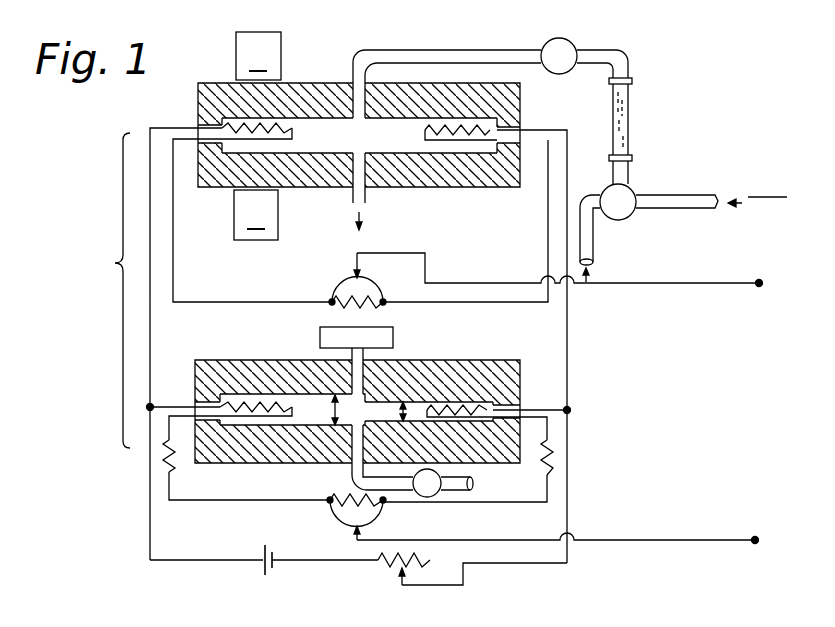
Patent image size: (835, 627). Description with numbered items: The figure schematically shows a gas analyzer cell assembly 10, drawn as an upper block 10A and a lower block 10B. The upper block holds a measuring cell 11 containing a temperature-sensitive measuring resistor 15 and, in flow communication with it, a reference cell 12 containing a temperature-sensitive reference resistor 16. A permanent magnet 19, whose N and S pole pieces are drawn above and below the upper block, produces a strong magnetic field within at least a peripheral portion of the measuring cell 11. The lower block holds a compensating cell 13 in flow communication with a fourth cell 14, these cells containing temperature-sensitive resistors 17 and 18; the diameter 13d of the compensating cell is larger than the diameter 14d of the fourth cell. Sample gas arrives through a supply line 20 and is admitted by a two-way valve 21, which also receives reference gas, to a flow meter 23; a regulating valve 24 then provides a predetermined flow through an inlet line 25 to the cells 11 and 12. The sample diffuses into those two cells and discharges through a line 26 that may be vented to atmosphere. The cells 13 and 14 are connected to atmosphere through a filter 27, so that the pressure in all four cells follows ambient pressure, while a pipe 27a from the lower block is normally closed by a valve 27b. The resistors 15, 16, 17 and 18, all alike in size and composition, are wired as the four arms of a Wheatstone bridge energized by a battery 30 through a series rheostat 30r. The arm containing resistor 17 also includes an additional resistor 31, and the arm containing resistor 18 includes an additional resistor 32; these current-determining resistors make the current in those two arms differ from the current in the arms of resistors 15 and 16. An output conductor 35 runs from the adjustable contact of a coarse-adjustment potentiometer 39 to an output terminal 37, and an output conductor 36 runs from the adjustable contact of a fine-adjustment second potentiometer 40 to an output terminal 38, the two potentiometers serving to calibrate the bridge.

The gas analyzer cell assembly 10 is at (100, 277).
The upper detector block 10A is at (198, 104).
The lower detector block 10B is at (195, 372).
The measuring cell 11 is at (329, 128).
The reference cell 12 is at (404, 130).
The compensating cell 13 is at (312, 408).
The diameter of compensating cell 13d is at (331, 412).
The fourth cell 14 is at (380, 410).
The diameter of fourth cell 14d is at (400, 413).
The measuring resistor 15 is at (273, 125).
The reference resistor 16 is at (482, 129).
The temperature-sensitive resistor 17 is at (255, 403).
The temperature-sensitive resistor 18 is at (456, 407).
The permanent magnet 19 is at (236, 47).
The supply line 20 is at (588, 228).
The two-way valve 21 is at (621, 192).
The flow meter 23 is at (629, 118).
The regulating valve 24 is at (568, 52).
The inlet line 25 is at (488, 52).
The discharge line 26 is at (366, 197).
The filter 27 is at (394, 334).
The pipe 27a is at (349, 473).
The valve 27b is at (431, 494).
The battery 30 is at (268, 576).
The series rheostat 30r is at (392, 566).
The current-determining resistor 31 is at (165, 465).
The current-determining resistor 32 is at (553, 465).
The output conductor 35 is at (665, 285).
The output conductor 36 is at (668, 539).
The output terminal 37 is at (759, 286).
The output terminal 38 is at (754, 537).
The potentiometer 39 is at (352, 287).
The second potentiometer 40 is at (347, 521).